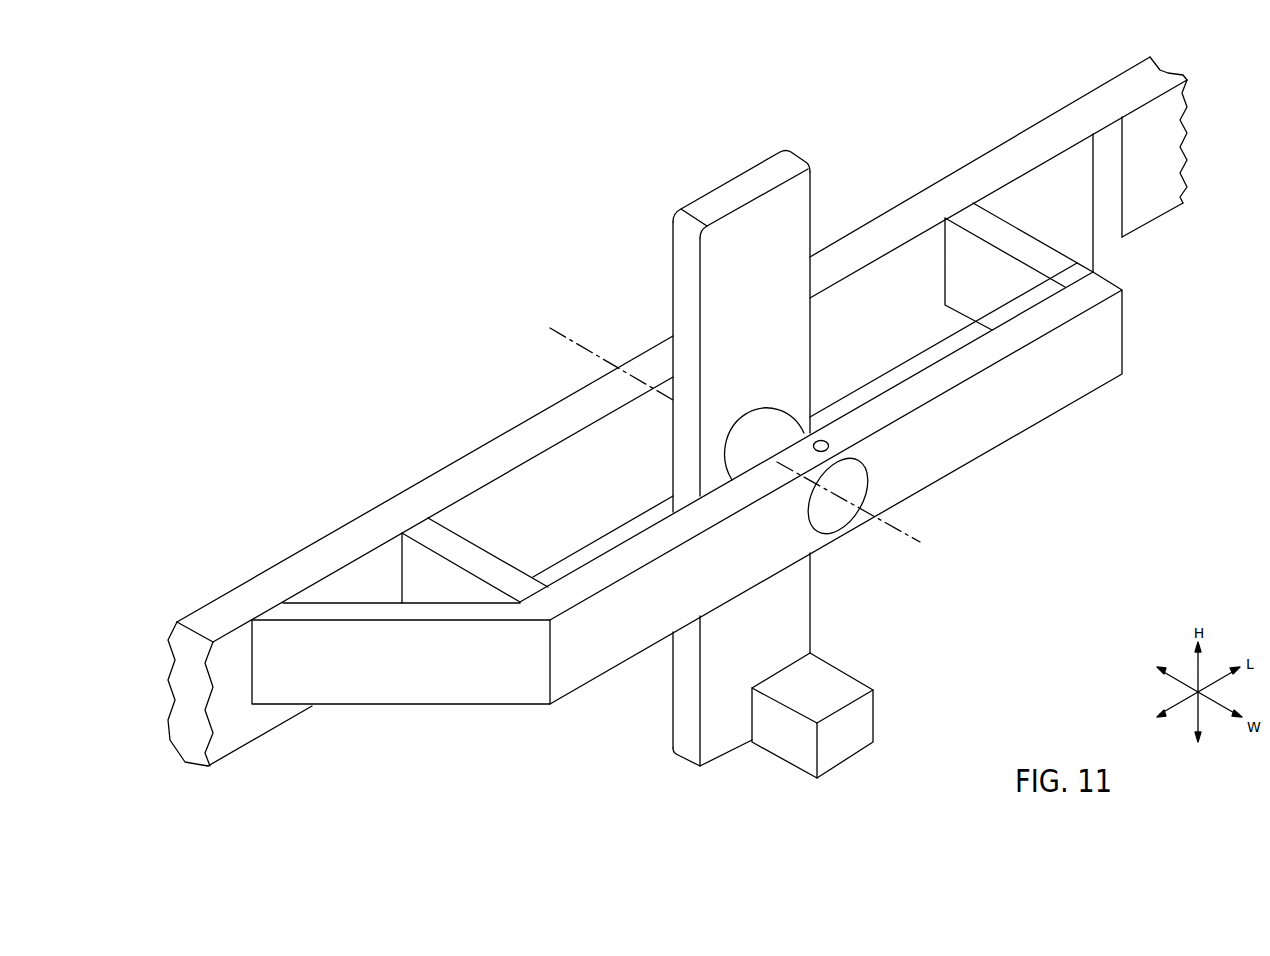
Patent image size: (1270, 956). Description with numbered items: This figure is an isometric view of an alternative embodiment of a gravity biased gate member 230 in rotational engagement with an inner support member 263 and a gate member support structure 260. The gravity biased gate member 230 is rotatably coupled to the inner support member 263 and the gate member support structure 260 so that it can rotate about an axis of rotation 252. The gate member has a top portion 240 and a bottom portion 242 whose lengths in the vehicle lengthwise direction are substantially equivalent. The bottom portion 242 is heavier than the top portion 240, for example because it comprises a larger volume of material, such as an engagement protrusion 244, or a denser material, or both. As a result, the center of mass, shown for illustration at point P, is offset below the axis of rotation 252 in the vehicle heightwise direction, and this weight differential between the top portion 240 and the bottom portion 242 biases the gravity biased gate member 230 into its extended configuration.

The gravity biased gate member 230 is at (779, 463).
The top portion 240 is at (713, 254).
The bottom portion 242 is at (713, 750).
The engagement protrusion 244 is at (870, 718).
The axis of rotation 252 is at (883, 525).
The gate member support structure 260 is at (687, 523).
The inner support member 263 is at (677, 411).
The center of mass point P is at (779, 592).